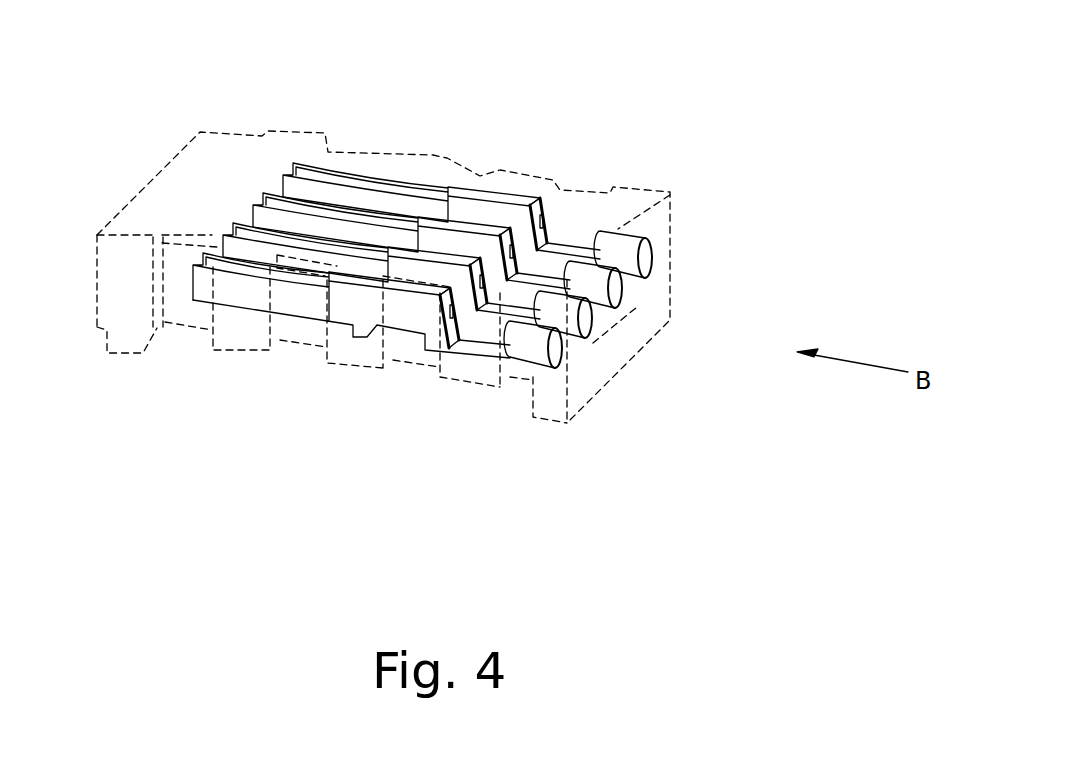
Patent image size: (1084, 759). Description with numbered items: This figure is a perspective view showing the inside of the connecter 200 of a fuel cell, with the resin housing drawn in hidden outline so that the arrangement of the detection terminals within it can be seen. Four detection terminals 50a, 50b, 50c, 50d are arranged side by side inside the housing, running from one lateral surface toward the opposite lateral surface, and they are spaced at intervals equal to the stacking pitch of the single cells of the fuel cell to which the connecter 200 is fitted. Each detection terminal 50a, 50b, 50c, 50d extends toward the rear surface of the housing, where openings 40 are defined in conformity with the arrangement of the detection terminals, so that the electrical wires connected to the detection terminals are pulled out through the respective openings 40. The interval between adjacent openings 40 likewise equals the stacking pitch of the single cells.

The connecter 200 is at (382, 505).
The detection terminal 50a is at (422, 323).
The detection terminal 50b is at (389, 212).
The detection terminal 50c is at (430, 208).
The detection terminal 50d is at (478, 188).
The opening 40 is at (650, 273).